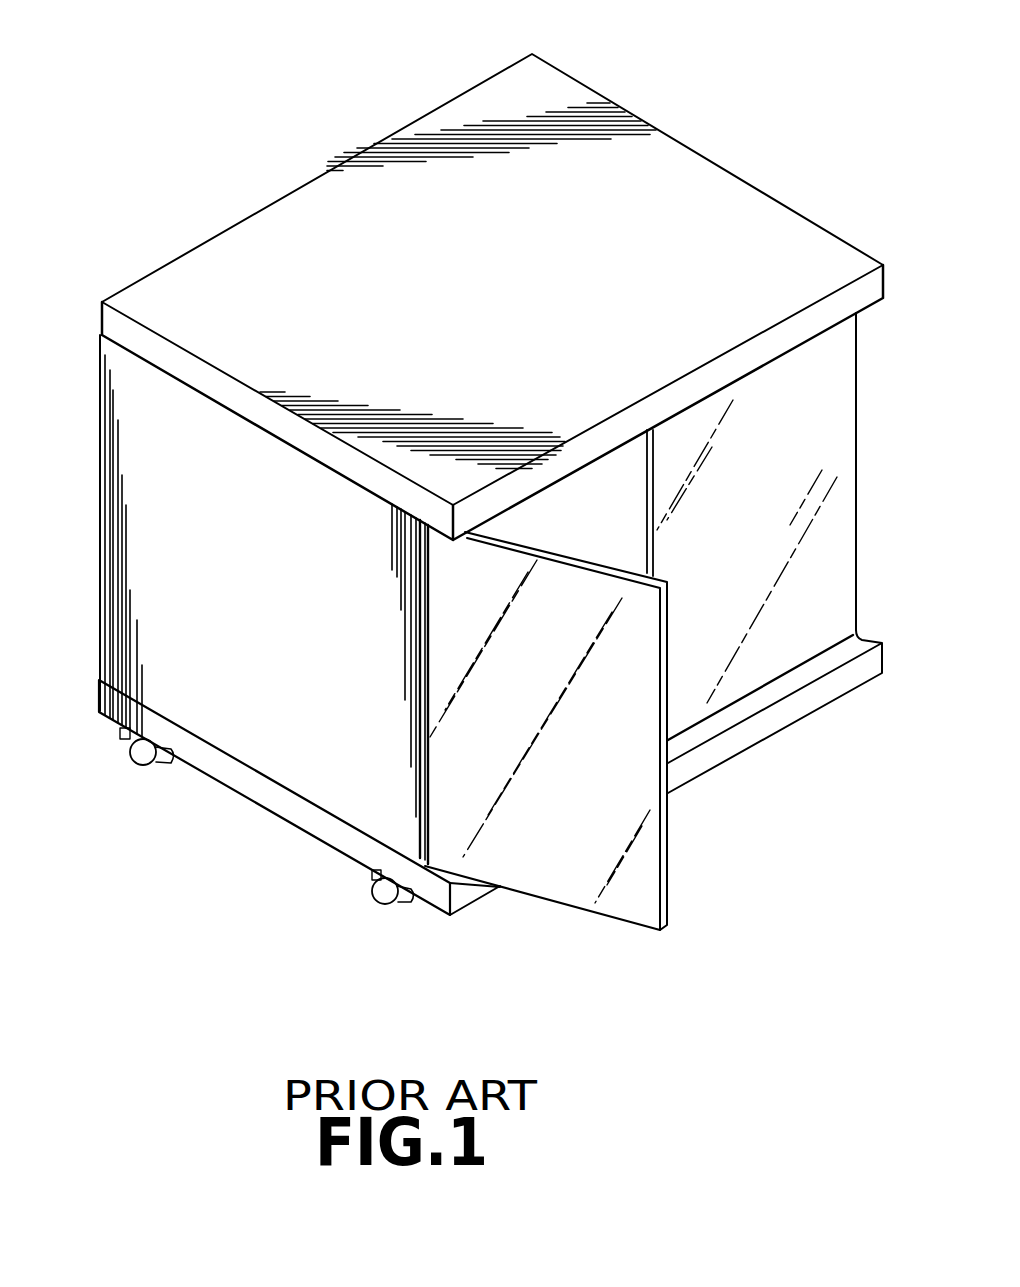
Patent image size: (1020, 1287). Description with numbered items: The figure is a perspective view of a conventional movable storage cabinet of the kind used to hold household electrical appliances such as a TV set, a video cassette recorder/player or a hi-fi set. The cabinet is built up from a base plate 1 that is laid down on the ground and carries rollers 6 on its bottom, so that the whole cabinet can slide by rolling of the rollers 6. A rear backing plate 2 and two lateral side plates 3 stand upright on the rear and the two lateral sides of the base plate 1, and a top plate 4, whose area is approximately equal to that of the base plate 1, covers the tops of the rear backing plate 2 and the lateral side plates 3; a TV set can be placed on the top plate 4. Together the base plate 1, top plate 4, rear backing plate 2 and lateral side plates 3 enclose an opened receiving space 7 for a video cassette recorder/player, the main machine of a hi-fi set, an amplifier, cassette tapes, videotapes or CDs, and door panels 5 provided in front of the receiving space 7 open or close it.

The base plate 1 is at (244, 798).
The rear backing plate 2 is at (94, 380).
The lateral side plates 3 is at (188, 555).
The top plate 4 is at (706, 166).
The door panels 5 is at (672, 882).
The rollers 6 is at (382, 903).
The receiving space 7 is at (590, 524).